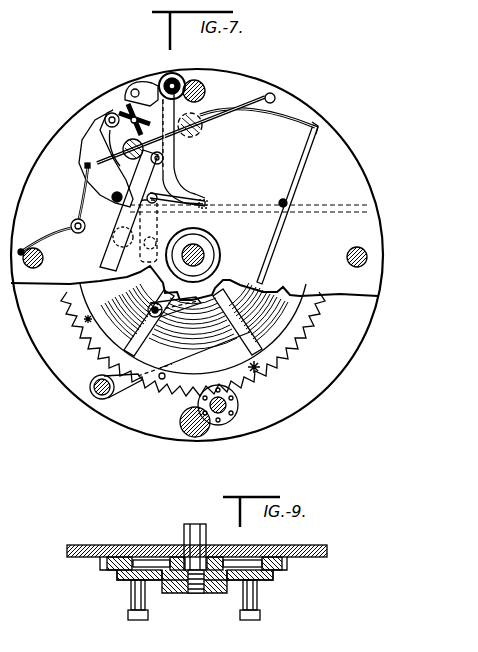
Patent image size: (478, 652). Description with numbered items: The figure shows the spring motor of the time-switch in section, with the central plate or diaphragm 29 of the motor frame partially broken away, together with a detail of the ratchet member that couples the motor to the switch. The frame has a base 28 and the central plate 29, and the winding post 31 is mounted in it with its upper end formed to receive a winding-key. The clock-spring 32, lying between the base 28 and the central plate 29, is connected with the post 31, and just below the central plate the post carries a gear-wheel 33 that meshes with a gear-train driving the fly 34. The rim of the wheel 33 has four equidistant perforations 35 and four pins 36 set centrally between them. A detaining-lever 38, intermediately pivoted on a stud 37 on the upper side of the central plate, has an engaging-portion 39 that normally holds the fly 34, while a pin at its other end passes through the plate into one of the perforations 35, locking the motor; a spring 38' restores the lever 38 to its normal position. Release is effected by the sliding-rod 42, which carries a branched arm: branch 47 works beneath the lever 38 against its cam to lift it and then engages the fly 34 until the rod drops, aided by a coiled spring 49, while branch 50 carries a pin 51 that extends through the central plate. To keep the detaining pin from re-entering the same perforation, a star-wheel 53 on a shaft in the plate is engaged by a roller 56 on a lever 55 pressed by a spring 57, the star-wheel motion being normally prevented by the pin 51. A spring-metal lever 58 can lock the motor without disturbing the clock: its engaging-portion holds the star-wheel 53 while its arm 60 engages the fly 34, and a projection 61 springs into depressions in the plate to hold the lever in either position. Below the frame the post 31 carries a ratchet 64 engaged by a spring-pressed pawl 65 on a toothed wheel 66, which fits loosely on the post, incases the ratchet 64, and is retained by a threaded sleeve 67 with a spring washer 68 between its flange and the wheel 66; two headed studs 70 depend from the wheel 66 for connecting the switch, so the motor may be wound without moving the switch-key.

In FIG. 7, the base 28 is at (133, 420).
In FIG. 7, the central plate 29 is at (342, 151).
In FIG. 7, the winding post 31 is at (210, 256).
In FIG. 9, the winding post 31 is at (193, 524).
In FIG. 7, the clock-spring 32 is at (268, 312).
In FIG. 7, the gear-wheel 33 is at (193, 340).
In FIG. 7, the fly 34 is at (298, 155).
In FIG. 7, the perforations 35 is at (257, 372).
In FIG. 7, the pins 36 is at (84, 323).
In FIG. 7, the stud 37 is at (201, 130).
In FIG. 7, the detaining-lever 38 is at (257, 123).
In FIG. 7, the spring 38' is at (186, 122).
In FIG. 7, the engaging-portion 39 is at (316, 133).
In FIG. 7, the sliding-rod 42 is at (186, 80).
In FIG. 7, the branch 47 is at (176, 172).
In FIG. 7, the coiled spring 49 is at (168, 74).
In FIG. 7, the branch 50 is at (144, 88).
In FIG. 7, the pin 51 is at (131, 92).
In FIG. 7, the star-wheel 53 is at (118, 109).
In FIG. 7, the lever 55 is at (90, 143).
In FIG. 7, the roller 56 is at (125, 153).
In FIG. 7, the spring 57 is at (85, 201).
In FIG. 7, the lever 58 is at (130, 221).
In FIG. 7, the arm 60 is at (161, 231).
In FIG. 7, the projection 61 is at (113, 237).
In FIG. 9, the ratchet 64 is at (175, 565).
In FIG. 9, the spring-pressed pawl 65 is at (165, 560).
In FIG. 9, the toothed wheel 66 is at (275, 572).
In FIG. 9, the sleeve 67 is at (187, 594).
In FIG. 9, the spring washer 68 is at (172, 585).
In FIG. 9, the headed studs 70 is at (128, 596).